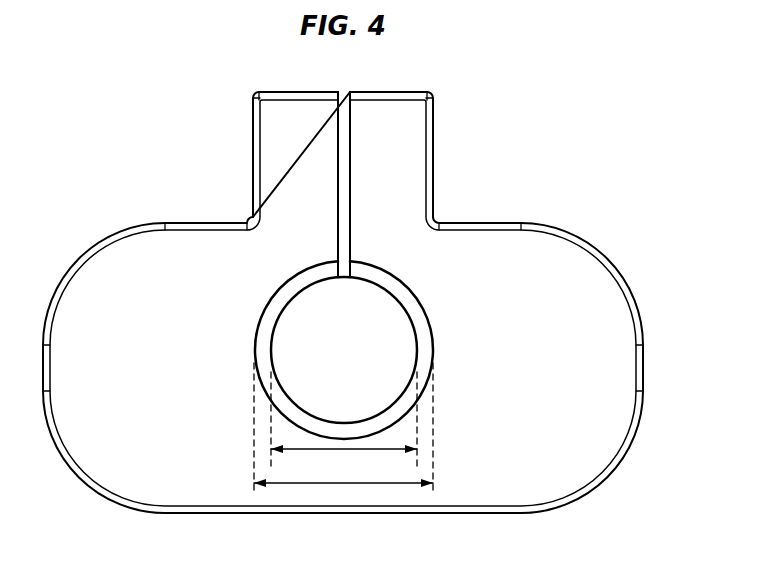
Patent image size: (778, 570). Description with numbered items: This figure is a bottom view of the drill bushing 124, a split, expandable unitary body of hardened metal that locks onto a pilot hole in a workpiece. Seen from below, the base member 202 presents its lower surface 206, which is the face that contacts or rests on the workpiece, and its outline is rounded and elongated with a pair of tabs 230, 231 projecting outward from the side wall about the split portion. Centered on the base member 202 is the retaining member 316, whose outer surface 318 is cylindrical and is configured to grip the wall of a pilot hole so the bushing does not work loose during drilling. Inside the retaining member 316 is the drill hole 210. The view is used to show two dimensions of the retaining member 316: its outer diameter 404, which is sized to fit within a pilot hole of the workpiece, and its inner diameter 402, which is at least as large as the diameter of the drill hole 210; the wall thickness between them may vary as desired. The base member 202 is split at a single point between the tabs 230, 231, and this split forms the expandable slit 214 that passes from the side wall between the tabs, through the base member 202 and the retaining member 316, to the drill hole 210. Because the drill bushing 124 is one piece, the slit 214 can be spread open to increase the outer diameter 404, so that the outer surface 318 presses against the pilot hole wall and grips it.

The drill bushing 124 is at (137, 133).
The base member 202 is at (642, 322).
The lower surface 206 is at (512, 253).
The drill hole 210 is at (386, 330).
The slit 214 is at (344, 102).
The tab 230 is at (393, 110).
The tab 231 is at (277, 108).
The retaining member 316 is at (280, 300).
The outer surface 318 is at (256, 325).
The inner diameter 402 is at (343, 450).
The outer diameter 404 is at (335, 485).